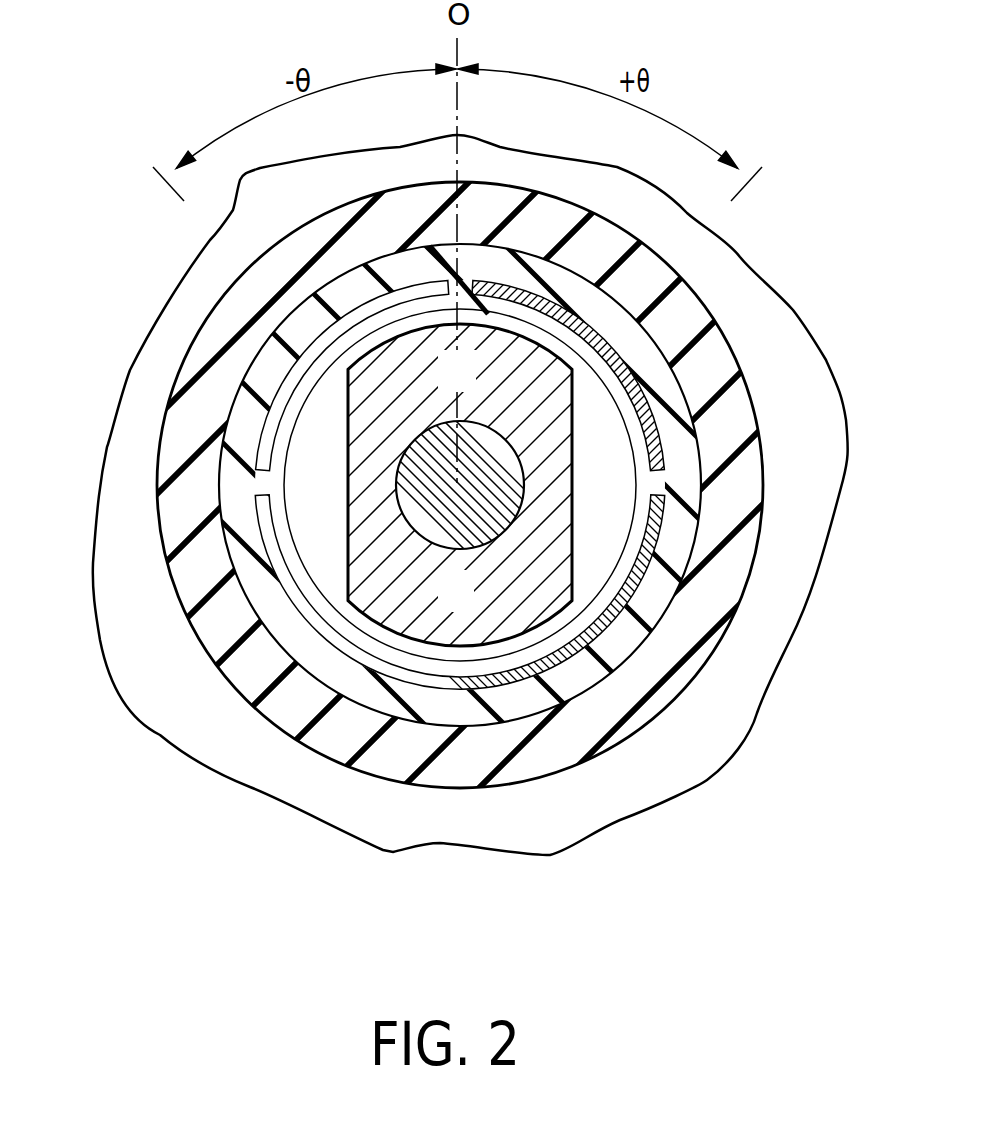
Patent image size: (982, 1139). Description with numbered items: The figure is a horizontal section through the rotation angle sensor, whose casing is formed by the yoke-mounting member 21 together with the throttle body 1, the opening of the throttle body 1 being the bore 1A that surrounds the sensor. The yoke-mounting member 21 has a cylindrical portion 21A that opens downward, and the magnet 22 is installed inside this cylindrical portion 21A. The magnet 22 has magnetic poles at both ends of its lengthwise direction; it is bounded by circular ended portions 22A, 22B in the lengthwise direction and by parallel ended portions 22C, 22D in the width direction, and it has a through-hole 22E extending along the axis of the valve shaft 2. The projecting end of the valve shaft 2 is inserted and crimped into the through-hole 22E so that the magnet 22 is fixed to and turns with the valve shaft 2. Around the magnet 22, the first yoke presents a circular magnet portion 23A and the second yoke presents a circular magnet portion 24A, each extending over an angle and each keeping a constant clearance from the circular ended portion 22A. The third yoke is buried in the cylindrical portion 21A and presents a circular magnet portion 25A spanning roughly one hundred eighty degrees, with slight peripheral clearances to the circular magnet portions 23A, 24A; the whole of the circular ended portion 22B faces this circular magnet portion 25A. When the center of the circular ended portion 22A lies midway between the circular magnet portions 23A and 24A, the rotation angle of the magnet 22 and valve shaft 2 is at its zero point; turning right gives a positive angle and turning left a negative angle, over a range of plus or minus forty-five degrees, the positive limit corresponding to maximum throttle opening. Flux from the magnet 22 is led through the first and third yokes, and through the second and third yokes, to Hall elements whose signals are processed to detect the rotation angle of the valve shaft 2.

The throttle body 1 is at (750, 688).
The housing bore 1A is at (373, 763).
The valve shaft 2 is at (508, 505).
The yoke-mounting member 21 is at (680, 620).
The cylindrical portion 21A is at (677, 402).
The magnet 22 is at (358, 455).
The circular ended portion 22A is at (455, 480).
The circular ended portion 22B is at (467, 733).
The parallel ended portion 22C is at (300, 538).
The parallel ended portion 22D is at (687, 457).
The through-hole 22E is at (335, 648).
The circular magnet portion 23A is at (665, 330).
The circular magnet portion 24A is at (262, 425).
The circular magnet portion 25A is at (520, 677).